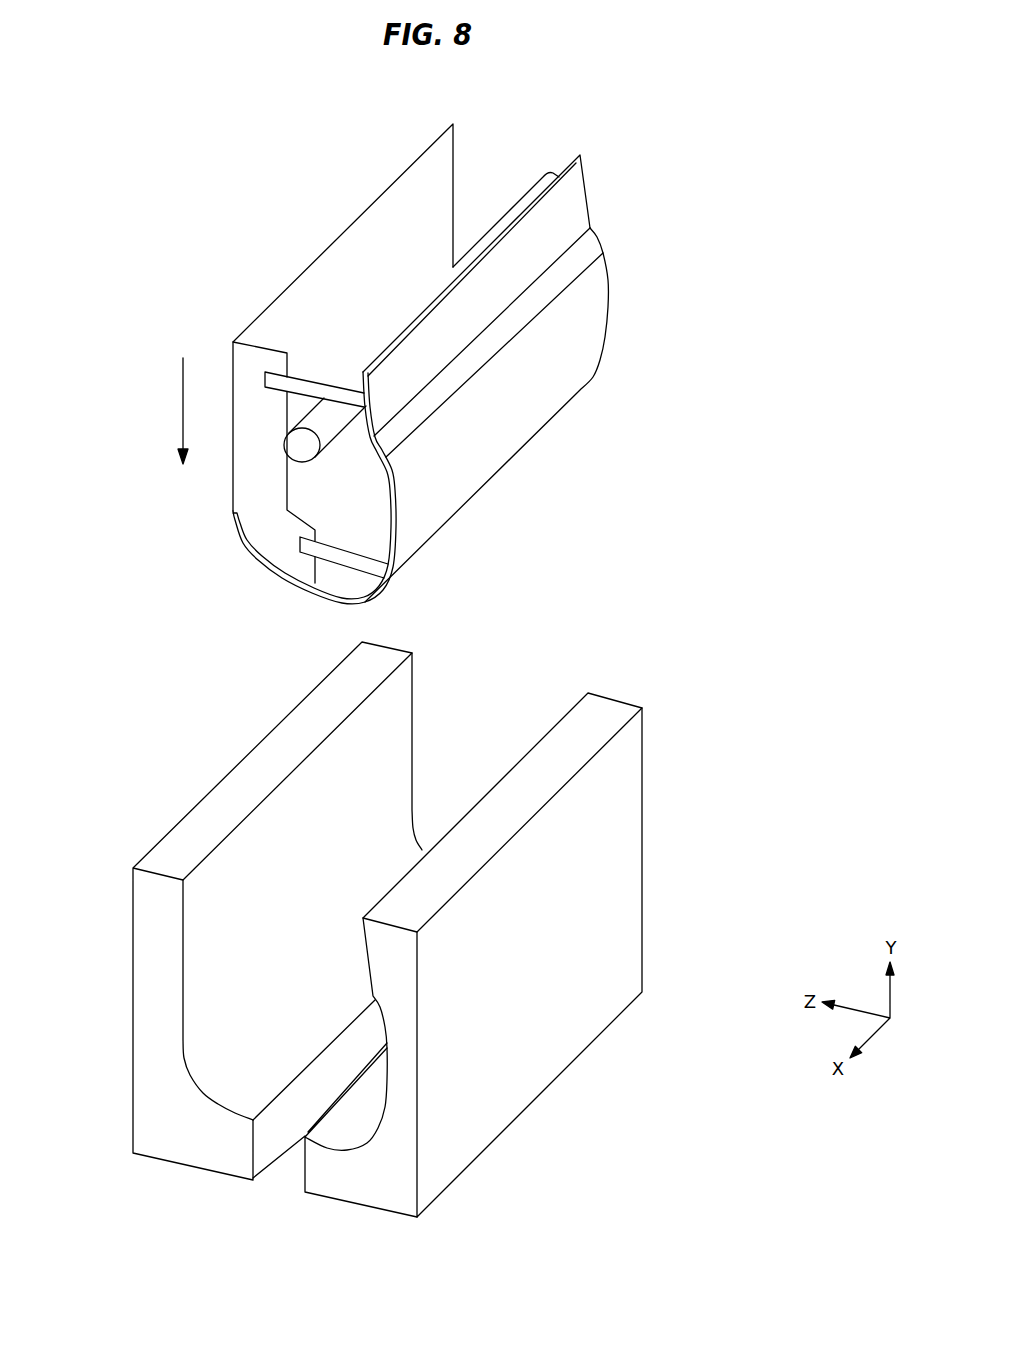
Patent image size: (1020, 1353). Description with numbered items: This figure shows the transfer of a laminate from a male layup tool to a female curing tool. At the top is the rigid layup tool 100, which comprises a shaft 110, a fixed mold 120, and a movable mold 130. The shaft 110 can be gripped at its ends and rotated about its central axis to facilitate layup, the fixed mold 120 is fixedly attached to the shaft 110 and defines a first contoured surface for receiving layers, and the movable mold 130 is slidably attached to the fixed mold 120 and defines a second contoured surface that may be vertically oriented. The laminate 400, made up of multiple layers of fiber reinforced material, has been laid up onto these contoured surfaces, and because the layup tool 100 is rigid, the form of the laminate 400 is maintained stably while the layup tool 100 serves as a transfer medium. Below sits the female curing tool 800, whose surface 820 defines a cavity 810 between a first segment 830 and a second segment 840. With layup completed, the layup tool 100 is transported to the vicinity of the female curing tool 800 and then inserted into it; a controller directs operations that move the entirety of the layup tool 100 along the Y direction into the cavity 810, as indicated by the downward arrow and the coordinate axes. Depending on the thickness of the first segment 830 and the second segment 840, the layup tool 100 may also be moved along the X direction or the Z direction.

The layup tool 100 is at (412, 382).
The shaft 110 is at (330, 432).
The fixed mold 120 is at (345, 276).
The movable mold 130 is at (371, 514).
The laminate 400 is at (342, 600).
The female curing tool 800 is at (372, 929).
The cavity 810 is at (372, 929).
The surface 820 is at (330, 836).
The first segment 830 is at (148, 997).
The second segment 840 is at (620, 866).